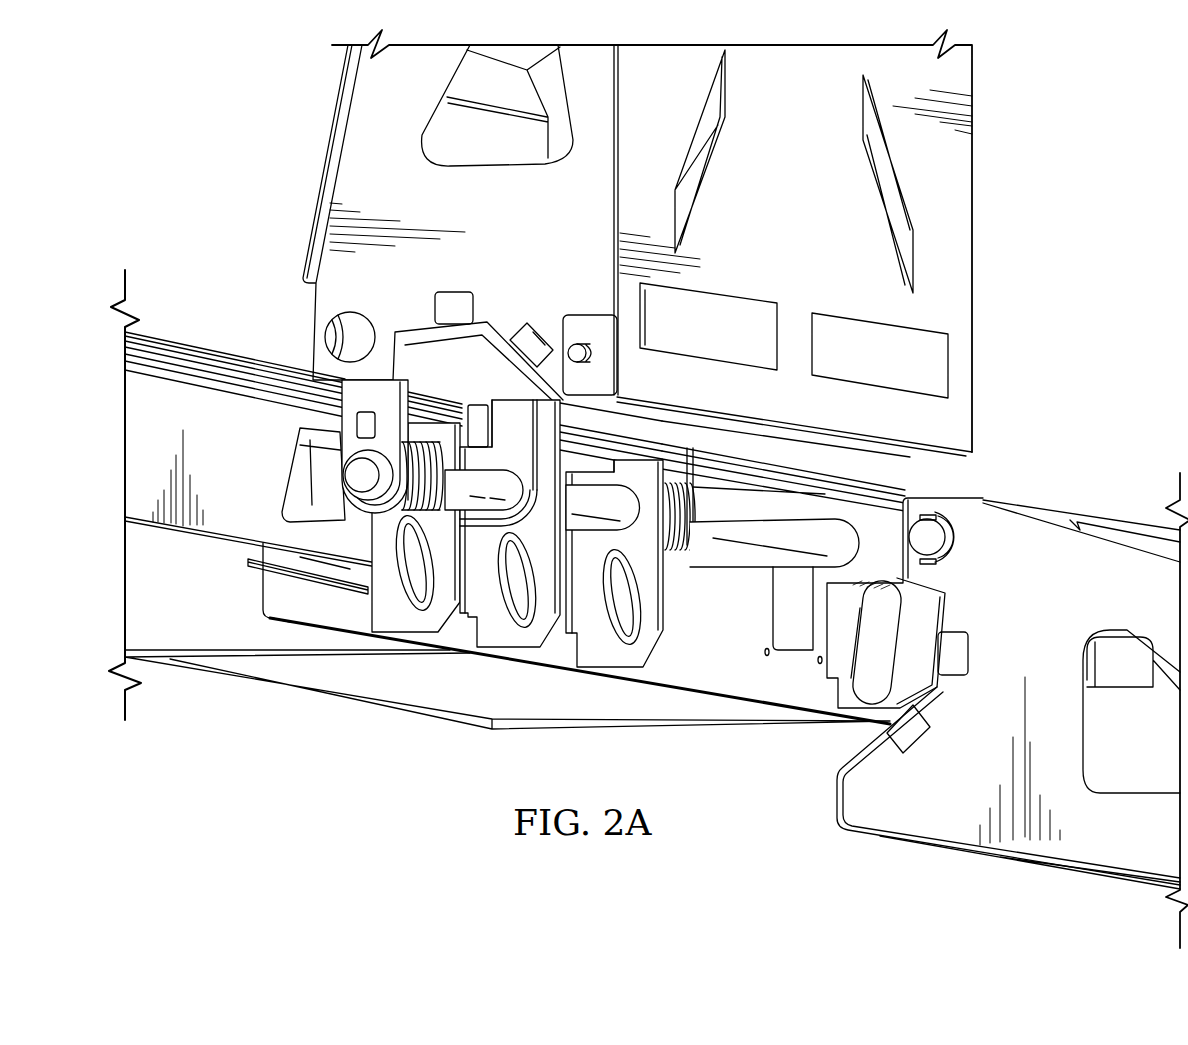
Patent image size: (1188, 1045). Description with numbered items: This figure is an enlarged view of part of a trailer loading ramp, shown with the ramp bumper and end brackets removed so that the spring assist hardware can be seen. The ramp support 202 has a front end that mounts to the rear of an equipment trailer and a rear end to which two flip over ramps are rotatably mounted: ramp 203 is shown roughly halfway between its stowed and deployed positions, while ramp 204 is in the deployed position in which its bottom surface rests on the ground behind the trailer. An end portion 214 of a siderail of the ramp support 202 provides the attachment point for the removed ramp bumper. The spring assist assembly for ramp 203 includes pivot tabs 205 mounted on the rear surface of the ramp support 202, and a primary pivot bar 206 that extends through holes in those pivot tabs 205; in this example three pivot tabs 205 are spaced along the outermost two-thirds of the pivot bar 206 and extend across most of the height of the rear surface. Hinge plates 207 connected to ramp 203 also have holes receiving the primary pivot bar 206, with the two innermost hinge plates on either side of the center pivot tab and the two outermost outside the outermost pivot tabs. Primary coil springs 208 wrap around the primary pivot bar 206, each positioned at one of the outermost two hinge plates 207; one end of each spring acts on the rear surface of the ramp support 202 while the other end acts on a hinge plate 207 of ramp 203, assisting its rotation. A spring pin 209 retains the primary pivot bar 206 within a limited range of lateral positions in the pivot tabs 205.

The ramp support 202 is at (192, 342).
The flip over ramp 203 is at (972, 162).
The flip over ramp 204 is at (1110, 520).
The pivot tab 205 is at (450, 620).
The primary pivot bar 206 is at (765, 560).
The hinge plate 207 is at (513, 423).
The primary coil spring 208 is at (415, 440).
The spring pin 209 is at (343, 490).
The end portion of siderail 214 is at (313, 583).